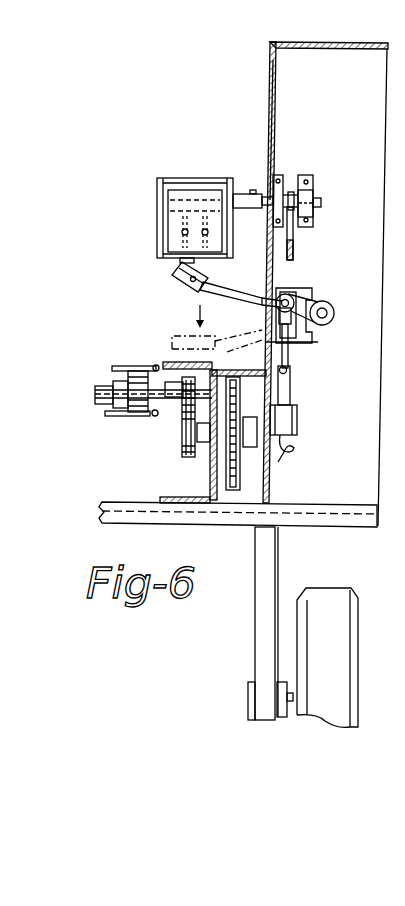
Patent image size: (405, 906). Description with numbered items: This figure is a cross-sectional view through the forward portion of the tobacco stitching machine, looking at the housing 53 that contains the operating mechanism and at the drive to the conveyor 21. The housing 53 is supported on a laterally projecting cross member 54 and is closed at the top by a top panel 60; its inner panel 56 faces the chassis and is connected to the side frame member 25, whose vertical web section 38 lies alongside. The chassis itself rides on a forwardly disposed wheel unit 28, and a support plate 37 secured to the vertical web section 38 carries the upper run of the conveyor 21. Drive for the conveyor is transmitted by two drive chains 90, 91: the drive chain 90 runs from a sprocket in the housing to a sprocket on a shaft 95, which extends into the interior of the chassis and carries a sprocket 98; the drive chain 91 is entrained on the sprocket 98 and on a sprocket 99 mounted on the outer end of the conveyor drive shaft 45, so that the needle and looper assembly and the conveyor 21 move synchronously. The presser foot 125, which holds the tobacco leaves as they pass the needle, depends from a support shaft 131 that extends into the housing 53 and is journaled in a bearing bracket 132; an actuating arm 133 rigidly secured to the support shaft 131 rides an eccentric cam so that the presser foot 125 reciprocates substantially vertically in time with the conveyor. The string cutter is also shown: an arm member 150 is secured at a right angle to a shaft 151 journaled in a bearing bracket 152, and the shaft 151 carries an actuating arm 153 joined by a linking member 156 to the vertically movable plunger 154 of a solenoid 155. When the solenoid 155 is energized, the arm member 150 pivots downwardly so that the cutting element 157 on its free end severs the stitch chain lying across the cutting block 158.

The top panel 60 is at (329, 284).
The housing 53 is at (262, 115).
The inner panel 56 is at (279, 140).
The bearing bracket 132 is at (310, 193).
The support shaft 131 is at (340, 214).
The actuating arm 133 is at (294, 251).
The presser foot 125 is at (157, 221).
The cutting element 157 is at (170, 288).
The arm member 150 is at (241, 306).
The bearing bracket 152 is at (320, 298).
The shaft 151 is at (325, 315).
The cutting block 158 is at (167, 350).
The drive chain 90 is at (225, 347).
The actuating arm 153 is at (319, 339).
The linking member 156 is at (323, 379).
The conveyor 21 is at (121, 353).
The plunger 154 is at (290, 393).
The conveyor drive shaft 45 is at (133, 400).
The solenoid 155 is at (298, 421).
The support plate 37 is at (111, 426).
The sprocket 99 is at (125, 408).
The drive chain 91 is at (183, 427).
The sprocket 98 is at (183, 447).
The side frame member 25 is at (208, 473).
The shaft 95 is at (260, 433).
The vertical web section 38 is at (208, 488).
The cross member 54 is at (238, 528).
The wheel unit 28 is at (278, 578).